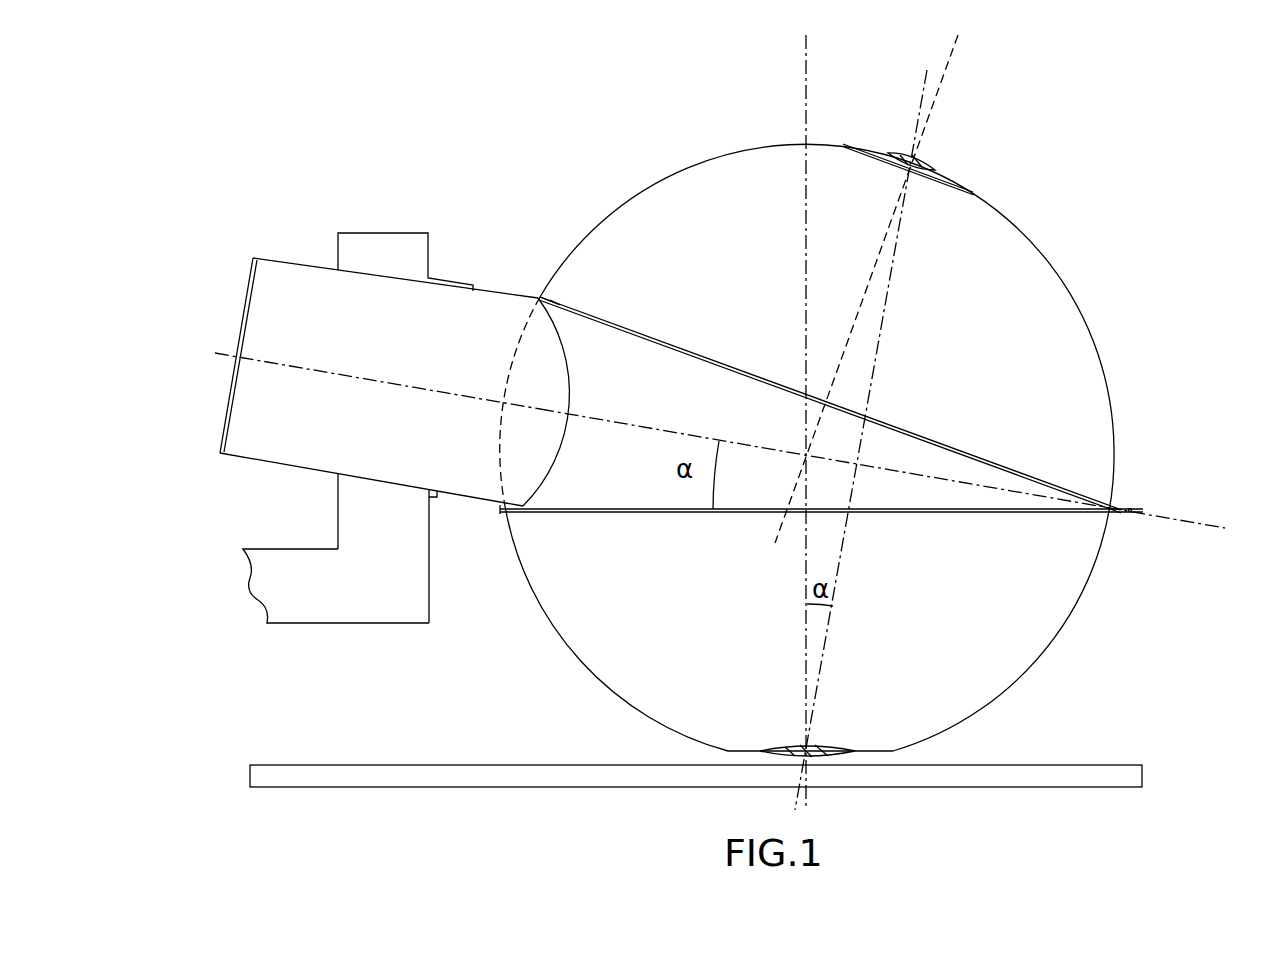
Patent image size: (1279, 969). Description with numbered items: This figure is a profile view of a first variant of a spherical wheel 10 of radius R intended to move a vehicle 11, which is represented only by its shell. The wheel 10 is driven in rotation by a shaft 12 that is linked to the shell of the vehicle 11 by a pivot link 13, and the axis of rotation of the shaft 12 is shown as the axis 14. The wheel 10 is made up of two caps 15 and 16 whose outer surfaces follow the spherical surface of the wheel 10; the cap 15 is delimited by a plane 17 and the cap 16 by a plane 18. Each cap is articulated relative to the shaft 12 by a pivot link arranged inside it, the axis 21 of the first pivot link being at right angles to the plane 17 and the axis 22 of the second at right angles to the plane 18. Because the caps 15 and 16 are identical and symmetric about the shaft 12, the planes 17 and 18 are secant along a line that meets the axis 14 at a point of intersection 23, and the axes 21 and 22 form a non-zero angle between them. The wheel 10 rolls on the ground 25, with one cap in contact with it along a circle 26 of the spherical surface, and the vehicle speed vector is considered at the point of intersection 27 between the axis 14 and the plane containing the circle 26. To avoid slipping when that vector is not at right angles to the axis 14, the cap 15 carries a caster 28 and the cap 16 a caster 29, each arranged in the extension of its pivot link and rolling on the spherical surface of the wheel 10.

The spherical wheel 10 is at (1180, 253).
The vehicle 11 is at (356, 599).
The shaft 12 is at (283, 283).
The pivot link 13 is at (367, 273).
The axis of rotation 14 is at (215, 352).
The cap 15 is at (668, 190).
The cap 16 is at (580, 642).
The plane 17 is at (665, 330).
The plane 18 is at (672, 512).
The axis of the pivot link 21 is at (885, 237).
The axis of the pivot link 22 is at (803, 655).
The point of intersection 23 is at (1135, 505).
The ground 25 is at (1107, 765).
The circle 26 is at (887, 345).
The point of intersection 27 is at (858, 462).
The caster 28 is at (925, 165).
The caster 29 is at (847, 765).
The radius R is at (1037, 238).